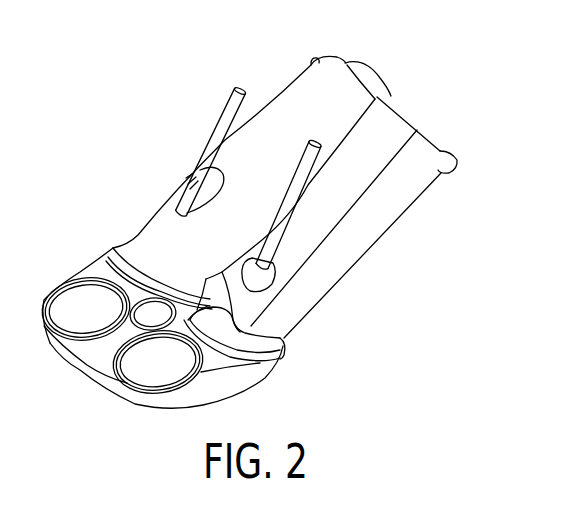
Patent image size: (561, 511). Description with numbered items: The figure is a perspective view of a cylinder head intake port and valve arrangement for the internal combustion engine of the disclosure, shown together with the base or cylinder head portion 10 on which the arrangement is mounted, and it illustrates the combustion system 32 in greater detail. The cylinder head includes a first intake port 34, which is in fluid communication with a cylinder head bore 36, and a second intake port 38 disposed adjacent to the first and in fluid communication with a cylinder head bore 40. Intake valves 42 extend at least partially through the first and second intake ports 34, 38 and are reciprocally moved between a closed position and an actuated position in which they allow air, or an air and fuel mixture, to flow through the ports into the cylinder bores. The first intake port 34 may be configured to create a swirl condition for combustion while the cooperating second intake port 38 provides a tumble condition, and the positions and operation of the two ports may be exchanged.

The base body 10 is at (73, 387).
The combustion system 32 is at (292, 208).
The first intake port 34 is at (273, 110).
The cylinder head bore 36 is at (113, 249).
The second intake port 38 is at (405, 195).
The cylinder head bore 40 is at (284, 349).
The intake valve 42 is at (218, 130).